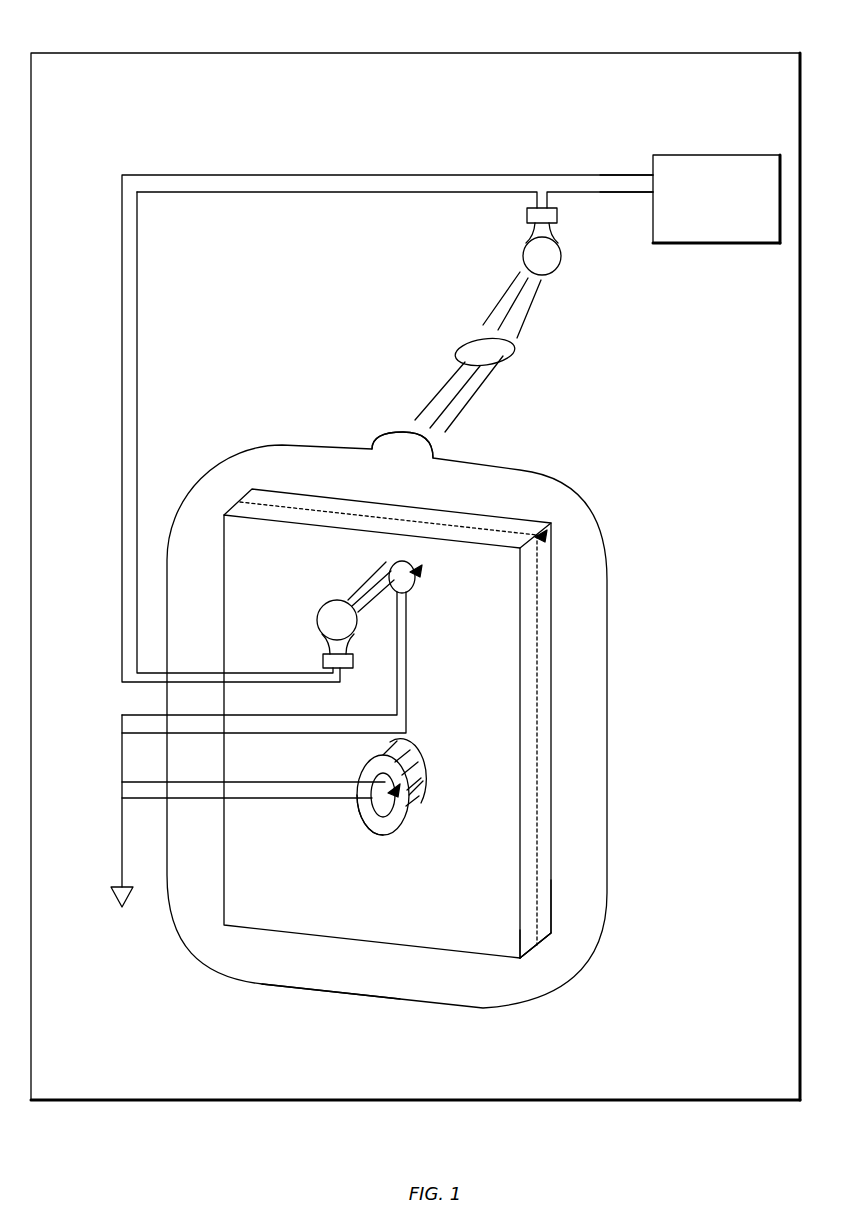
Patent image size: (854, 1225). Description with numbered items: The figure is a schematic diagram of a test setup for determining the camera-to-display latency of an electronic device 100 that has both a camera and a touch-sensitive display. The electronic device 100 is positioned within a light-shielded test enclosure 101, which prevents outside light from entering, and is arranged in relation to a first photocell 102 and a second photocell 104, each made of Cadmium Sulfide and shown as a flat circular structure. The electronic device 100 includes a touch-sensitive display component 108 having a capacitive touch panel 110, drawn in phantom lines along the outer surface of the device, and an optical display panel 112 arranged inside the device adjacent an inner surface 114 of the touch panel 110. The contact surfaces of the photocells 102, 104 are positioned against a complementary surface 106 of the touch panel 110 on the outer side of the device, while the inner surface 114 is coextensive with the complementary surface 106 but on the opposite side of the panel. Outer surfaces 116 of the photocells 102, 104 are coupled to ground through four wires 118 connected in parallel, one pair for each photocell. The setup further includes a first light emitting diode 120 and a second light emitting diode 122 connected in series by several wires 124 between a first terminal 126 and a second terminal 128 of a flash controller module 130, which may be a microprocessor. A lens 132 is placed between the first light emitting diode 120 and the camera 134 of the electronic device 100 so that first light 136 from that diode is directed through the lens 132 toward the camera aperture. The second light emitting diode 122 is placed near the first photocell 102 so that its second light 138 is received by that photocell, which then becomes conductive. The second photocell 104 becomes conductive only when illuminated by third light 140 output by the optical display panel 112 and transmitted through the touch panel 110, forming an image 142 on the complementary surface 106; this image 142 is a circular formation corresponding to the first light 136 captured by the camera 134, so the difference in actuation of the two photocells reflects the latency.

The electronic device 100 is at (608, 633).
The test enclosure 101 is at (735, 52).
The first photocell 102 is at (408, 592).
The second photocell 104 is at (386, 763).
The complementary surface 106 is at (387, 723).
The touch-sensitive display component 108 is at (545, 893).
The touch panel 110 is at (310, 893).
The optical display panel 112 is at (541, 797).
The inner surface 114 is at (532, 933).
The outer surfaces 116 is at (418, 569).
The wires 118 is at (148, 714).
The first light emitting diode 120 is at (525, 247).
The second light emitting diode 122 is at (317, 620).
The wires 124 is at (188, 173).
The first terminal 126 is at (652, 194).
The second terminal 128 is at (652, 173).
The flash controller module 130 is at (715, 154).
The lens 132 is at (515, 353).
The camera 134 is at (436, 448).
The first light 136 is at (507, 292).
The second light 138 is at (364, 588).
The third light 140 is at (421, 810).
The image 142 is at (385, 838).